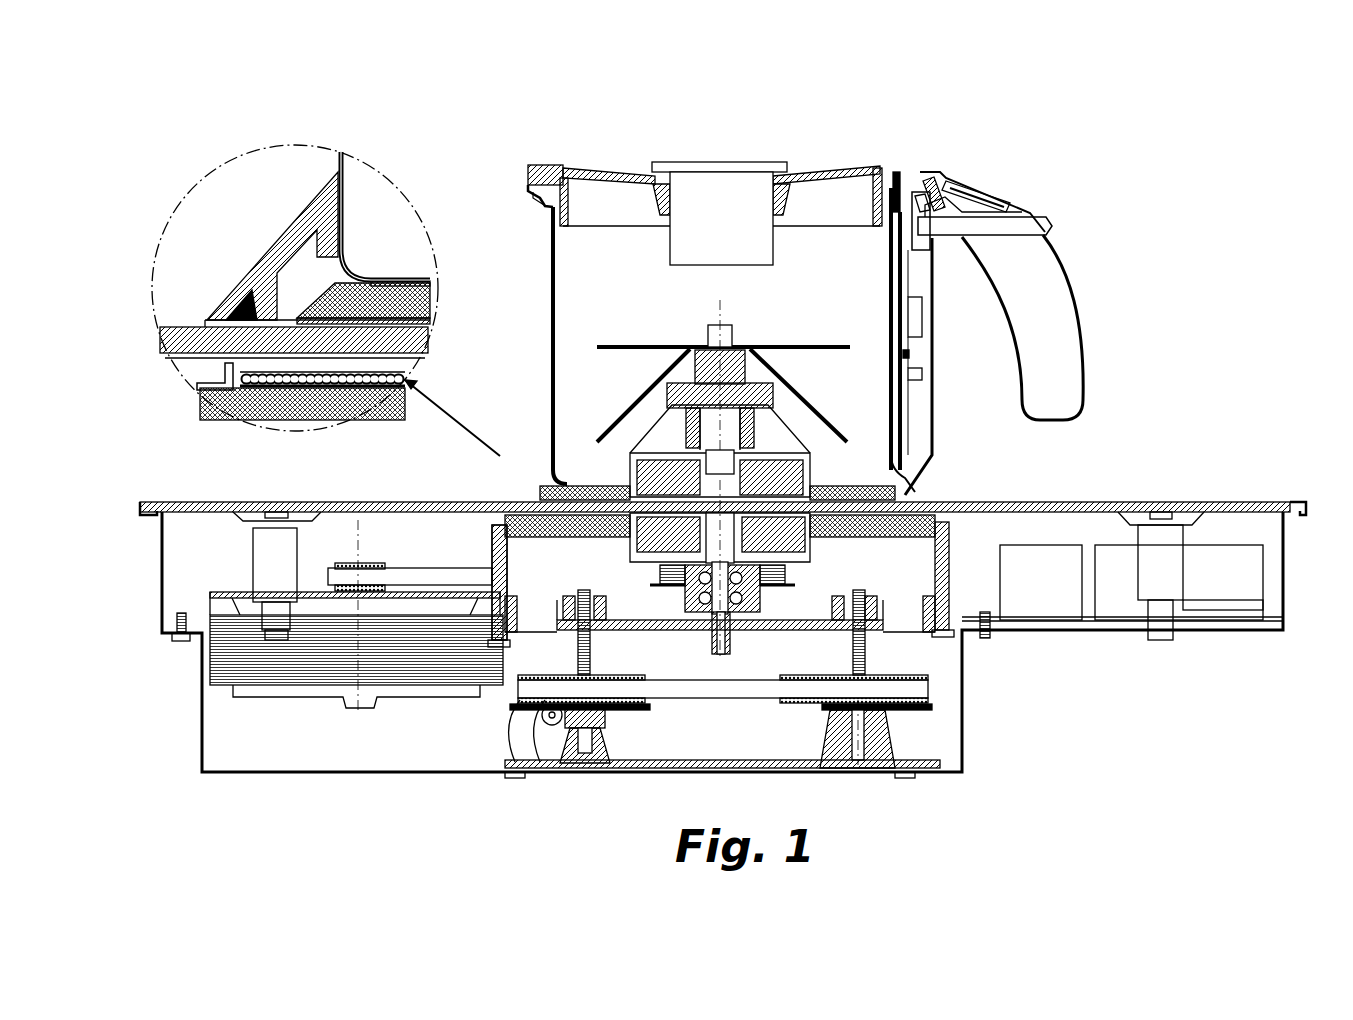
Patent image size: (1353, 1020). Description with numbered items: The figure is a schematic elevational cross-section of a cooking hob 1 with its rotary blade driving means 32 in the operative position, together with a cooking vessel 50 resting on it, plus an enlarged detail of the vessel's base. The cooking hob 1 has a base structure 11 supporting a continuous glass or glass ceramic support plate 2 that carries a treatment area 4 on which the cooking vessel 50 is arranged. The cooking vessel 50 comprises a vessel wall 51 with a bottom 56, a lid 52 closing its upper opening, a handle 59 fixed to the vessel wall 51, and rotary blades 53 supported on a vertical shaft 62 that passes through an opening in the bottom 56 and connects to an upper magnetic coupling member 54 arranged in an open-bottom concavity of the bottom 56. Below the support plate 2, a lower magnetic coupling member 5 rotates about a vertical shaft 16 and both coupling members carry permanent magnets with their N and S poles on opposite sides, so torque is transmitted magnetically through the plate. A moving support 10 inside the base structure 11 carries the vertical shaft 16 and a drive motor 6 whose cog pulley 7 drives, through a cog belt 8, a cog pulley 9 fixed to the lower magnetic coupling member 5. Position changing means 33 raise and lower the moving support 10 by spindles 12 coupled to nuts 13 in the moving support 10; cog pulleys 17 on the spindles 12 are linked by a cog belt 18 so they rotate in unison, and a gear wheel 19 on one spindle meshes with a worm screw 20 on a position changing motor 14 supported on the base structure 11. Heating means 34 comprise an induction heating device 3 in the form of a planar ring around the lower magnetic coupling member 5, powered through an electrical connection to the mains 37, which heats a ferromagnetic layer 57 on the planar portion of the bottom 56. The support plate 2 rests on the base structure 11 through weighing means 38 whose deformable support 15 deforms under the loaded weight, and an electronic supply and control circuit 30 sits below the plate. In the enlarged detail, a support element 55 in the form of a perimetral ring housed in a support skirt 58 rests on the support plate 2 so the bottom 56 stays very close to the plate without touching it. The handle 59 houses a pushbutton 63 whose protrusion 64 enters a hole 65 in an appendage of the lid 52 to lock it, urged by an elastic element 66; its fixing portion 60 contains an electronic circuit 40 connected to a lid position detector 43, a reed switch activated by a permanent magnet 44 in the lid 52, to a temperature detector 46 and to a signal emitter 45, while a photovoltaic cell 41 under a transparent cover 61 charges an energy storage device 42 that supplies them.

The cooking hob 1 is at (1078, 458).
The support plate 2 is at (184, 330).
The induction heating device 3 is at (352, 378).
The treatment area 4 is at (424, 342).
The lower magnetic coupling member 5 is at (806, 562).
The drive motor 6 is at (311, 686).
The cog pulley 7 is at (348, 566).
The cog belt 8 is at (410, 570).
The cog pulley 9 is at (771, 592).
The moving support 10 is at (226, 588).
The base structure 11 is at (966, 700).
The spindles 12 is at (591, 645).
The nuts 13 is at (555, 626).
The position changing motor 14 is at (510, 736).
The deformable support 15 is at (263, 620).
The vertical shaft 16 is at (728, 648).
The cog pulleys 17 is at (638, 712).
The cog belt 18 is at (752, 696).
The gear wheel 19 is at (612, 746).
The worm screw 20 is at (547, 730).
The electronic supply and control circuit 30 is at (1090, 632).
The rotary blade driving means 32 is at (428, 554).
The position changing means 33 is at (632, 722).
The heating means 34 is at (207, 378).
The mains 37 is at (1261, 572).
The weighing means 38 is at (1198, 596).
The electronic circuit 40 is at (909, 354).
The photovoltaic cell 41 is at (1007, 198).
The energy storage device 42 is at (923, 312).
The lid position detector 43 is at (874, 206).
The permanent magnet 44 is at (896, 174).
The signal emitter 45 is at (917, 378).
The temperature detector 46 is at (888, 452).
The cooking vessel 50 is at (324, 162).
The vessel wall 51 is at (365, 194).
The lid 52 is at (634, 164).
The rotary blades 53 is at (796, 344).
The upper magnetic coupling member 54 is at (818, 458).
The support element 55 is at (226, 300).
The bottom 56 is at (413, 258).
The ferromagnetic layer 57 is at (380, 283).
The support skirt 58 is at (270, 235).
The handle 59 is at (1082, 328).
The fixing portion 60 is at (938, 336).
The transparent cover 61 is at (992, 190).
The vertical shaft 62 is at (697, 423).
The pushbutton 63 is at (1058, 230).
The protrusion 64 is at (922, 172).
The hole 65 is at (943, 178).
The elastic element 66 is at (890, 238).